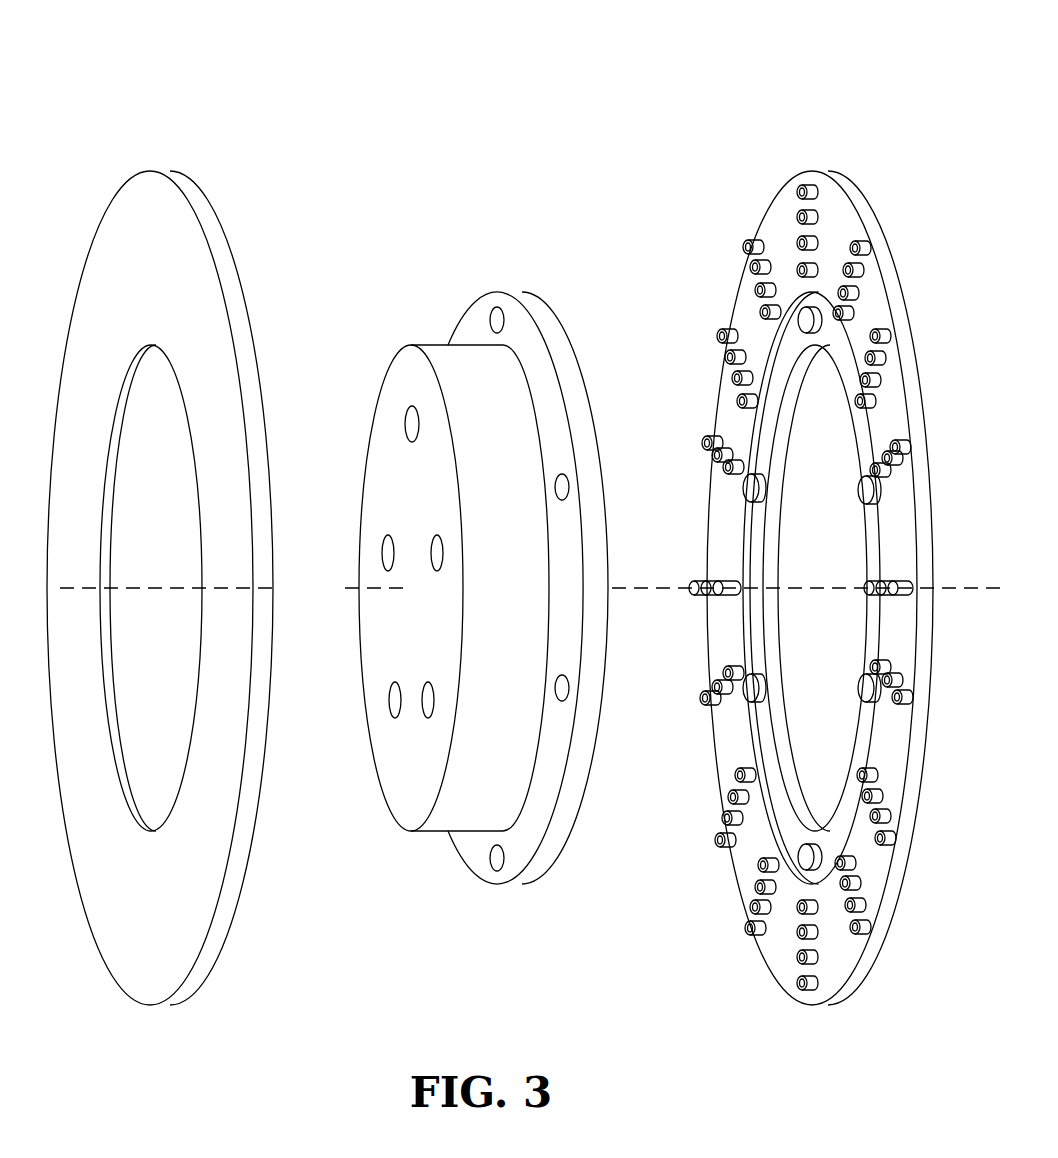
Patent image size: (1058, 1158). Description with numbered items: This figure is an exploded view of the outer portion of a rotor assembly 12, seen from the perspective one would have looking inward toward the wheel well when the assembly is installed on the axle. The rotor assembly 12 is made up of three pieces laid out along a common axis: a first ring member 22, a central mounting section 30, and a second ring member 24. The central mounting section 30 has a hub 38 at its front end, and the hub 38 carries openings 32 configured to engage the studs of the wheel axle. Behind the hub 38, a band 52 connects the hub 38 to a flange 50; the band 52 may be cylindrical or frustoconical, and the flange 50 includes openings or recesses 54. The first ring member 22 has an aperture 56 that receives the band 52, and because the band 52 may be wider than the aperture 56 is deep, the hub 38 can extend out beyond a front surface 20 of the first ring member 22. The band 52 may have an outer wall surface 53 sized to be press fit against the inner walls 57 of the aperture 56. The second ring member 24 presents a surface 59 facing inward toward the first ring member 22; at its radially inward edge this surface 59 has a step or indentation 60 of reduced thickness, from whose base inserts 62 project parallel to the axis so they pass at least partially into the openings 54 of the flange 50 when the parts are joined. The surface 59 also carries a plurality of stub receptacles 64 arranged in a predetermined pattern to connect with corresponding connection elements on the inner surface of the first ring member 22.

The rotor assembly 12 is at (578, 127).
The front surface 20 is at (125, 215).
The first ring member 22 is at (215, 187).
The second ring member 24 is at (768, 185).
The central mounting section 30 is at (475, 557).
The openings 32 is at (435, 573).
The hub 38 is at (402, 372).
The flange 50 is at (545, 795).
The band 52 is at (468, 362).
The outer wall surface 53 is at (455, 805).
The openings or recesses 54 is at (553, 488).
The aperture 56 is at (200, 655).
The inner walls 57 is at (120, 428).
The surface 59 is at (740, 310).
The step or indentation 60 is at (862, 440).
The inserts 62 is at (758, 497).
The stub receptacles 64 is at (708, 442).